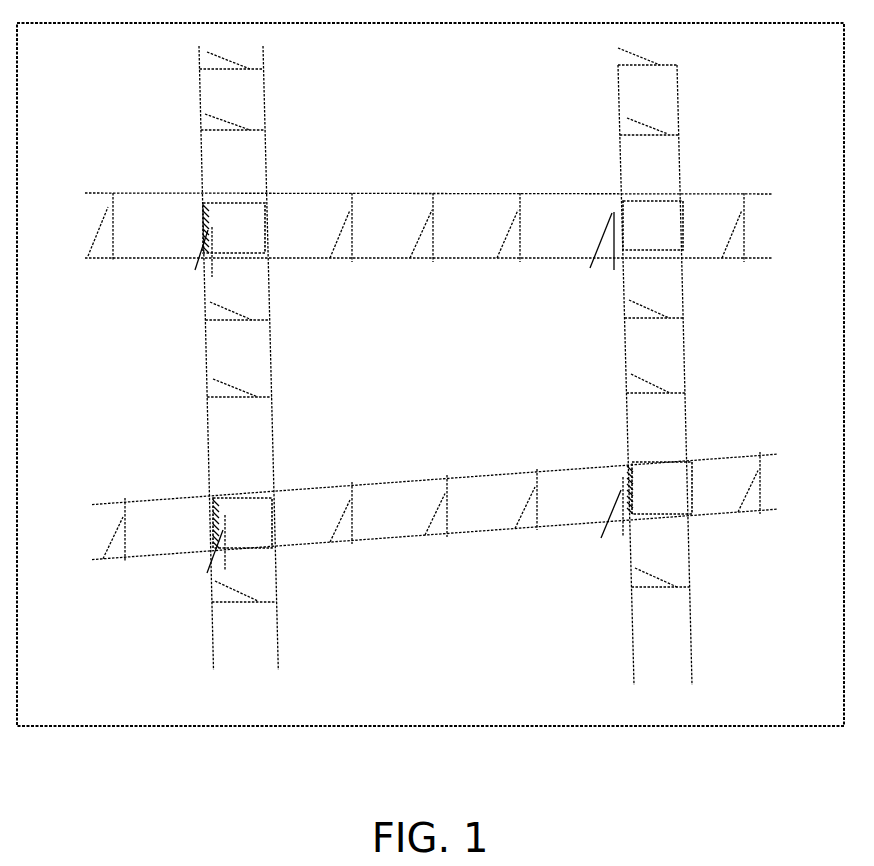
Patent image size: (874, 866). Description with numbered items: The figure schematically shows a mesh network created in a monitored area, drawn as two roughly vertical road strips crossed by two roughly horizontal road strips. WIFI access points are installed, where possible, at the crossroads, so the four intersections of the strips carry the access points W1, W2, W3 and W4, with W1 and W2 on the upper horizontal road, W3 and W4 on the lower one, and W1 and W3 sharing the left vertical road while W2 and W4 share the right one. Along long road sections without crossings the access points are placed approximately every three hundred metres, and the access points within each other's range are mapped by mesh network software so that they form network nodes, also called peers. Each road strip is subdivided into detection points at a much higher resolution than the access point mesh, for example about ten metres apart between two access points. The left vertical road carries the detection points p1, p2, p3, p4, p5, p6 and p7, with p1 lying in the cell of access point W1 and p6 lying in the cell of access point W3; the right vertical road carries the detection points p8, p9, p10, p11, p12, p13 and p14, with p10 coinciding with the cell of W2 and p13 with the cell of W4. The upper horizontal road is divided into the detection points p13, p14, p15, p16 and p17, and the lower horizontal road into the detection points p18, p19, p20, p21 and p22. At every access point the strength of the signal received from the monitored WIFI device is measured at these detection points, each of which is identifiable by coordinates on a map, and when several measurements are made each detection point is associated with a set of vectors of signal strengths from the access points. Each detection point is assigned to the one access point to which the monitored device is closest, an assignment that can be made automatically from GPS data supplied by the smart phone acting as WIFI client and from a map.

The detection point p1 is at (234, 229).
The detection point p2 is at (232, 91).
The detection point p3 is at (233, 153).
The detection point p4 is at (237, 327).
The detection point p5 is at (239, 437).
The detection point p6 is at (242, 527).
The detection point p7 is at (244, 615).
The detection point p8 is at (648, 91).
The detection point p9 is at (649, 156).
The detection point p10 is at (653, 227).
The detection point p11 is at (654, 325).
The detection point p12 is at (657, 418).
The detection point p13 is at (390, 354).
The detection point p14 is at (511, 439).
The detection point p15 is at (465, 227).
The detection point p16 is at (558, 227).
The detection point p17 is at (757, 227).
The detection point p18 is at (158, 529).
The detection point p19 is at (388, 511).
The detection point p20 is at (481, 503).
The detection point p21 is at (569, 498).
The detection point p22 is at (772, 483).
The WIFI access point W1 is at (230, 240).
The WIFI access point W2 is at (636, 235).
The WIFI access point W3 is at (239, 535).
The WIFI access point W4 is at (646, 500).